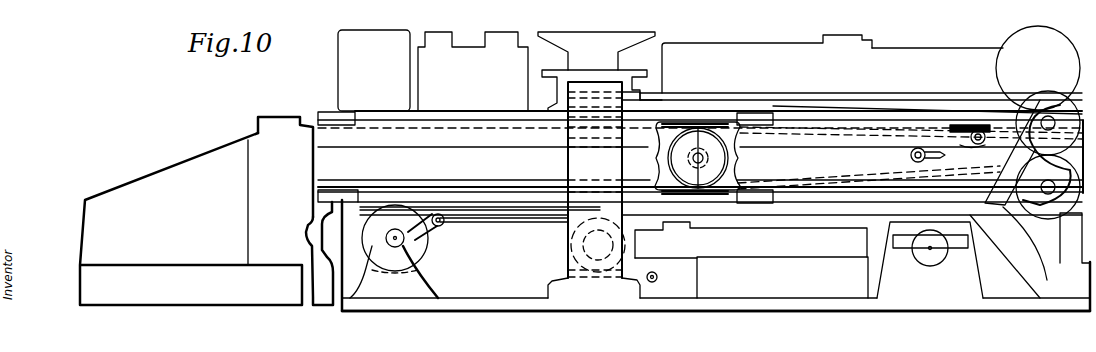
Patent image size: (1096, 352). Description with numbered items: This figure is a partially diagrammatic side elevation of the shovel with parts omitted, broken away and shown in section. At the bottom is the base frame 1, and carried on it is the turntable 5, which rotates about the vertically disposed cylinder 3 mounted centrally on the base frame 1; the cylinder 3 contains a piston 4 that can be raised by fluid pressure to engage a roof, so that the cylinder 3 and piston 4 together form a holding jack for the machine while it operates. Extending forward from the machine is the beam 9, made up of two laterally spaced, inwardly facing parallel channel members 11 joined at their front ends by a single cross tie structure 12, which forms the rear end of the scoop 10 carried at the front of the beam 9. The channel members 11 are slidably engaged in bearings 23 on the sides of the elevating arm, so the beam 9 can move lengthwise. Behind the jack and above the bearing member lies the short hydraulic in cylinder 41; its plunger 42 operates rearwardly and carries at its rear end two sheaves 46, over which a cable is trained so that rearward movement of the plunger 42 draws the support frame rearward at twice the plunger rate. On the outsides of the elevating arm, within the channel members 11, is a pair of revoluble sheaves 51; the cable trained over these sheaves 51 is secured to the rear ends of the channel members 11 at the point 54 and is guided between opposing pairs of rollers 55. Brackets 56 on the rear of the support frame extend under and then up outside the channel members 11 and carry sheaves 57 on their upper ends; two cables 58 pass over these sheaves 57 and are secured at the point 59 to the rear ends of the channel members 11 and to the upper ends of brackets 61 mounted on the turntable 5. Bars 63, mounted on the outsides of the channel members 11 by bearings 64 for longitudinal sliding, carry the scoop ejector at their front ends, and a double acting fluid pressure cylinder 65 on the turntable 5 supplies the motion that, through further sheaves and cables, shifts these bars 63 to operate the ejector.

The base frame 1 is at (745, 303).
The cylinder 3 is at (652, 72).
The piston 4 is at (625, 62).
The turntable 5 is at (843, 304).
The beam 9 is at (720, 204).
The scoop 10 is at (262, 186).
The channel members 11 is at (708, 192).
The cross tie structure 12 is at (293, 110).
The bearings 23 is at (350, 97).
The in cylinder 41 is at (788, 43).
The plunger 42 is at (950, 48).
The sheaves 46 is at (1010, 44).
The sheaves 51 is at (692, 138).
The cable securing point 54 is at (960, 140).
The rollers 55 is at (992, 172).
The brackets 56 is at (1013, 212).
The sheaves 57 is at (1040, 222).
The cables 58 is at (812, 92).
The cable securing point 59 is at (910, 155).
The brackets 61 is at (610, 86).
The bars 63 is at (700, 156).
The bearings 64 is at (432, 143).
The cylinder 65 is at (797, 258).